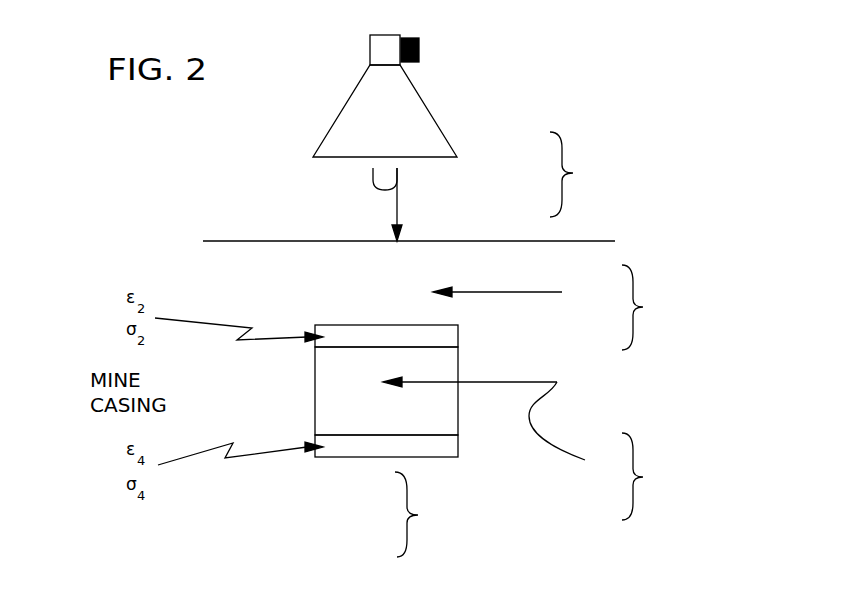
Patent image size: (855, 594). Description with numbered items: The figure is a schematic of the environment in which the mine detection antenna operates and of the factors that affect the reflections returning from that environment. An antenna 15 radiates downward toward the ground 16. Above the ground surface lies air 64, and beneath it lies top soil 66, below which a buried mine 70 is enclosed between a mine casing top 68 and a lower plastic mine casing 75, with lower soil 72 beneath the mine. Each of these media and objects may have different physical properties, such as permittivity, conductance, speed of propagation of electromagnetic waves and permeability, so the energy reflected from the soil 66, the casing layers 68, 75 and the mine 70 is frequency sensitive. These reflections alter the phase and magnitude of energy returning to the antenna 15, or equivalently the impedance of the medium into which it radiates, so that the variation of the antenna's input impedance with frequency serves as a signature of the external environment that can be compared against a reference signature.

The antenna 15 is at (423, 100).
The ground 16 is at (228, 291).
The air 64 is at (570, 147).
The top soil 66 is at (637, 280).
The mine casing top 68 is at (368, 333).
The mine 70 is at (643, 443).
The lower soil 72 is at (415, 538).
The lower plastic mine casing 75 is at (355, 448).